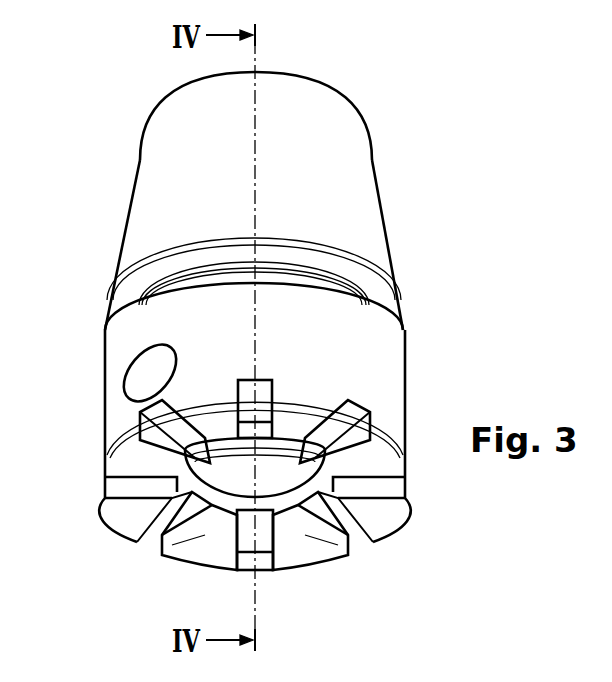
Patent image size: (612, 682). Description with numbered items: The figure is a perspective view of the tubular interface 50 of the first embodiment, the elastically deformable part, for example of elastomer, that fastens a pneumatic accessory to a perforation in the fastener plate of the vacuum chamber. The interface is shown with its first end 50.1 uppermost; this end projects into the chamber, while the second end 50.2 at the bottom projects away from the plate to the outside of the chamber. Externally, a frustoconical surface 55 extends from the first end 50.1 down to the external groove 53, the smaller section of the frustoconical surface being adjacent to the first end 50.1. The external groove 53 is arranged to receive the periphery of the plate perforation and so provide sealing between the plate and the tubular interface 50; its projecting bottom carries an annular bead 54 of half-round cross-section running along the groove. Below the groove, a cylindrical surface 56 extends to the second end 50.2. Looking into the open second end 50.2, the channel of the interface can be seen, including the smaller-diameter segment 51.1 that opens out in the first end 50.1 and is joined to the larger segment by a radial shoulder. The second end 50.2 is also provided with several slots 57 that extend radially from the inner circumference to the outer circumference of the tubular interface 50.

The tubular interface 50 is at (248, 173).
The first end 50.1 is at (168, 97).
The second end 50.2 is at (135, 458).
The segment 51.1 is at (284, 512).
The external groove 53 is at (125, 312).
The annular bead 54 is at (292, 283).
The frustoconical surface 55 is at (128, 181).
The cylindrical surface 56 is at (210, 475).
The slots 57 is at (132, 490).